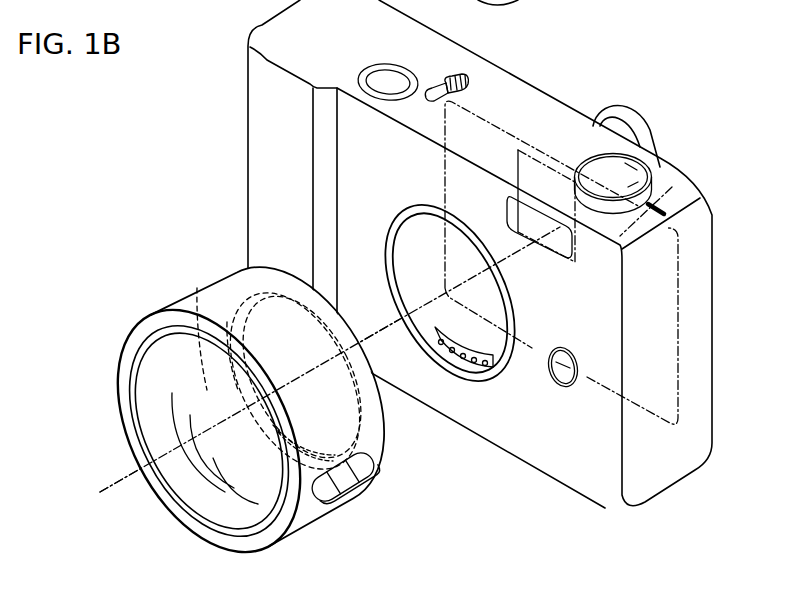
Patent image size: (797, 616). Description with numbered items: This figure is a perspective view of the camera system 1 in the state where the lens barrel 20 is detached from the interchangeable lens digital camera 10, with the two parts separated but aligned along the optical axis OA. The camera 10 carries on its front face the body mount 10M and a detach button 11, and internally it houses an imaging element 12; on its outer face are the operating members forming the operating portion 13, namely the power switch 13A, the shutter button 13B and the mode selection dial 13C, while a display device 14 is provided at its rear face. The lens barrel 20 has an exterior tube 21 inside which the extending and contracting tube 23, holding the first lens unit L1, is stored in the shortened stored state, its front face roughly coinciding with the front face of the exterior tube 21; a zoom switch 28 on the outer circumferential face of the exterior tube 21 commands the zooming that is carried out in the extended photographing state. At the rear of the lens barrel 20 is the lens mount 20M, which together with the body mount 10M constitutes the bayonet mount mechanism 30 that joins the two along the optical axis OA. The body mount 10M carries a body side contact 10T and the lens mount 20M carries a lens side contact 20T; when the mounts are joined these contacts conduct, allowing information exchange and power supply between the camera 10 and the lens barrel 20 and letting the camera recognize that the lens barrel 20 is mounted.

The camera system 1 is at (162, 200).
The camera 10 is at (246, 128).
The lens barrel 20 is at (204, 272).
The exterior tube 21 is at (158, 310).
The extending and contracting tube 23 is at (123, 362).
The first lens unit L1 is at (152, 435).
The optical axis OA is at (128, 476).
The lens side contact 20T is at (200, 293).
The lens mount 20M is at (385, 426).
The body mount 10M is at (510, 360).
The body side contact 10T is at (462, 360).
The mount mechanism 30 is at (500, 506).
The zoom switch 28 is at (349, 484).
The detach button 11 is at (562, 380).
The imaging element 12 is at (672, 187).
The operating portion 13 is at (716, 108).
The power switch 13A is at (470, 88).
The shutter button 13B is at (393, 72).
The mode selection dial 13C is at (658, 163).
The display device 14 is at (605, 385).